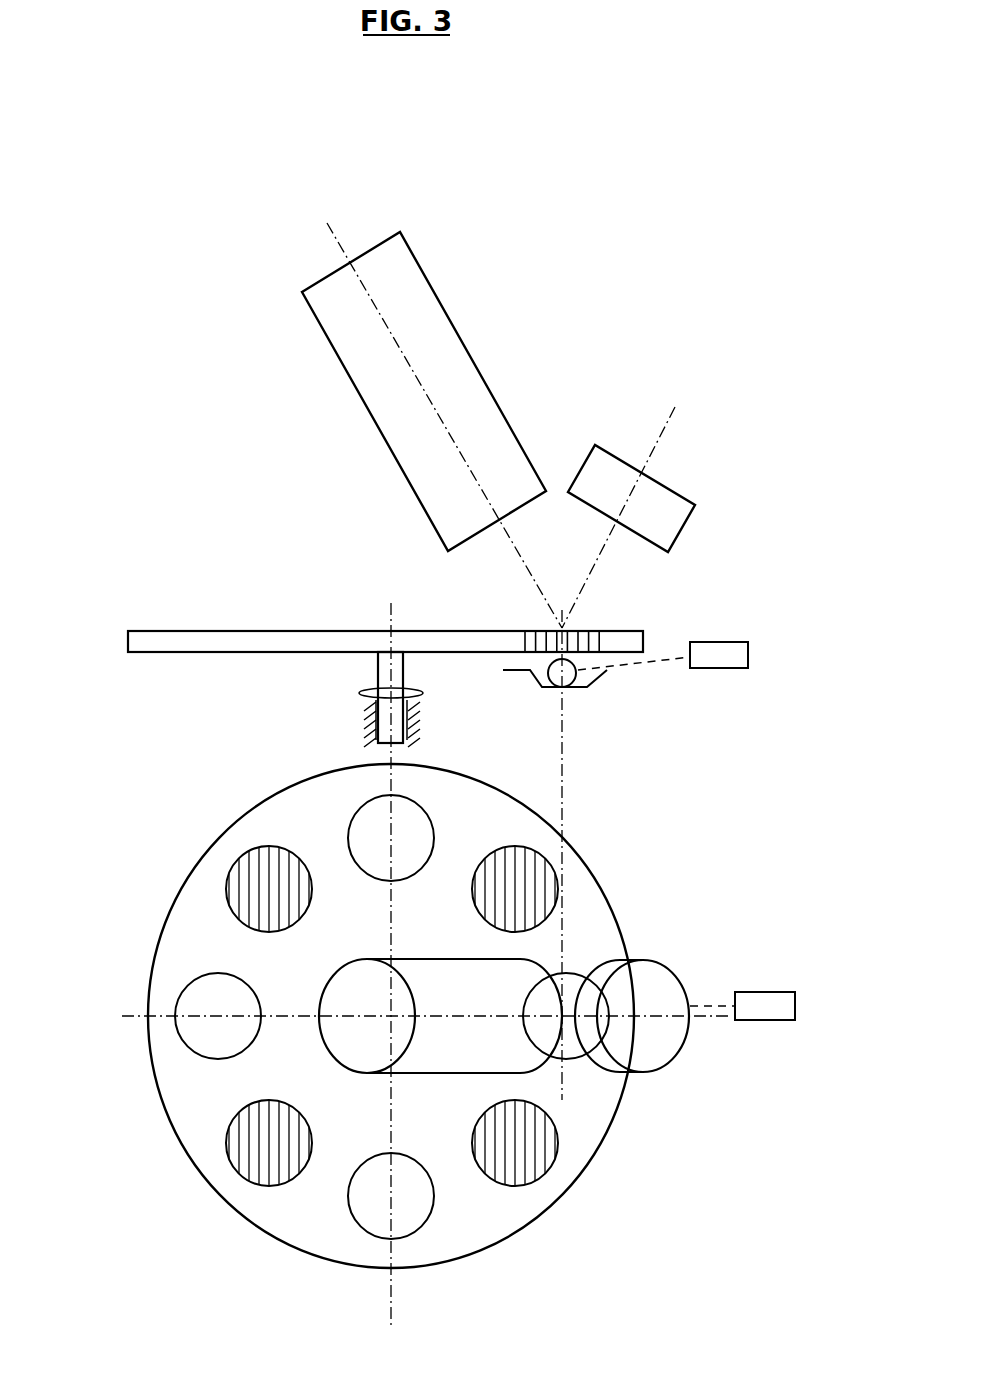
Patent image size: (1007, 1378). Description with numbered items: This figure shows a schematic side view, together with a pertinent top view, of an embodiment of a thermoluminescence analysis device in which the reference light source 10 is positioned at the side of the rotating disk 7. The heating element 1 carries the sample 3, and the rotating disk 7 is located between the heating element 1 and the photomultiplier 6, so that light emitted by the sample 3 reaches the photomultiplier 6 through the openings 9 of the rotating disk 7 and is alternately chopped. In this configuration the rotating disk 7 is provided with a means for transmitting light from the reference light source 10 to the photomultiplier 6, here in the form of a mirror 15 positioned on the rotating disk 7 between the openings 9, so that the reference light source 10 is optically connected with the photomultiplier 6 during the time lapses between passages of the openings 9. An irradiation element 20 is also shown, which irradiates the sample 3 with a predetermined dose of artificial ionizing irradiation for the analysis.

The heating element 1 is at (585, 688).
The sample 3 is at (573, 662).
The photomultiplier 6 is at (463, 375).
The rotating disk 7 is at (593, 905).
The openings 9 is at (217, 1017).
The reference light source 10 is at (662, 500).
The mirror 15 is at (533, 628).
The irradiation element 20 is at (750, 655).